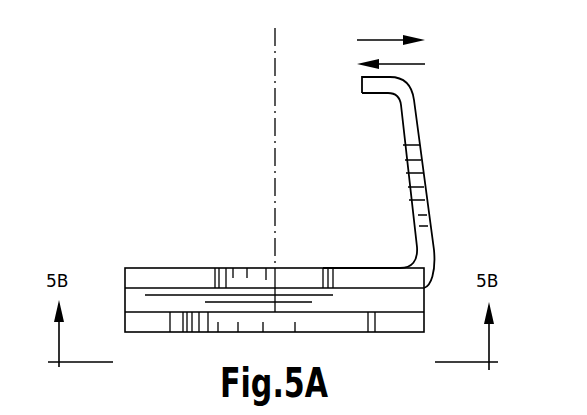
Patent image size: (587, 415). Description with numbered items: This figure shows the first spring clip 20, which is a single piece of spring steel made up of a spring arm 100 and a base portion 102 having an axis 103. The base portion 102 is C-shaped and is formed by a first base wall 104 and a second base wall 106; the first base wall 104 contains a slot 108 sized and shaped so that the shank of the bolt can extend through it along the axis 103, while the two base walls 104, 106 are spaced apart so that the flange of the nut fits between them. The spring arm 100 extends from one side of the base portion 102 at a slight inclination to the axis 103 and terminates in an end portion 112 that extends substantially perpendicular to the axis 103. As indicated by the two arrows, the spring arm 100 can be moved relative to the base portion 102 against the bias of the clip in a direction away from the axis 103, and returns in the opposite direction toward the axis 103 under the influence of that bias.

The first spring clip 20 is at (166, 128).
The spring arm 100 is at (415, 104).
The base portion 102 is at (130, 258).
The axis 103 is at (272, 62).
The first base wall 104 is at (182, 268).
The second base wall 106 is at (145, 333).
The slot 108 is at (322, 277).
The end portion 112 is at (363, 93).